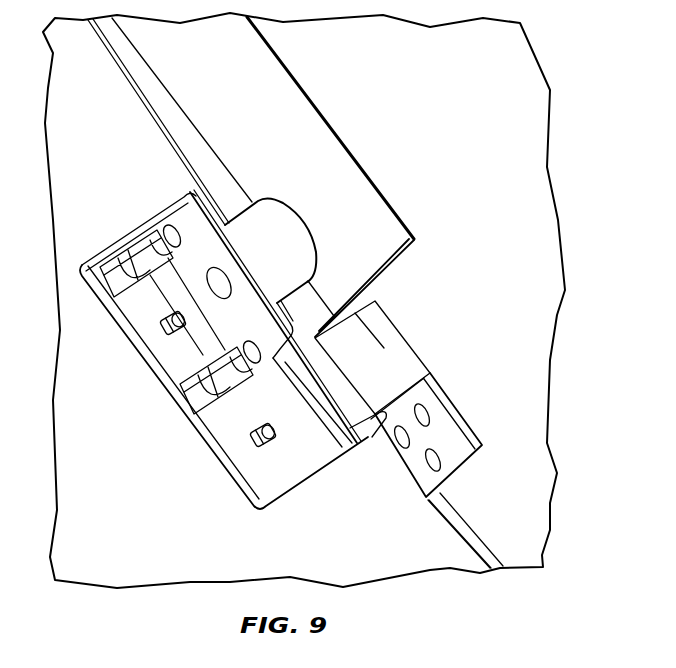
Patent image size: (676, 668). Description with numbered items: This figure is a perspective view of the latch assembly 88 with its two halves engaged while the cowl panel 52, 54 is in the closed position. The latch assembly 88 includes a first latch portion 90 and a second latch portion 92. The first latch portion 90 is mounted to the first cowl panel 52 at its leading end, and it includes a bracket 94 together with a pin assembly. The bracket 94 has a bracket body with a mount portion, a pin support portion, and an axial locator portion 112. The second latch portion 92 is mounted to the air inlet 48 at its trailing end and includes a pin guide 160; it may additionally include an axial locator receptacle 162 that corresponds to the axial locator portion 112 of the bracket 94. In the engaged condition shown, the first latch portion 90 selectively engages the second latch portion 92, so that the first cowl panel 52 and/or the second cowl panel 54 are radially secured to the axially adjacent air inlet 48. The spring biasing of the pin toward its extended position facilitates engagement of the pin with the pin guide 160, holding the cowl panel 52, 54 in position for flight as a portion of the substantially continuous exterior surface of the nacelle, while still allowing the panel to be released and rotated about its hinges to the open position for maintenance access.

The air inlet 48 is at (154, 92).
The pin guide 160 is at (257, 88).
The second latch portion 92 is at (376, 172).
The latch assembly 88 is at (234, 371).
The first latch portion 90 is at (202, 454).
The bracket 94 is at (237, 369).
The axial locator portion 112 is at (363, 433).
The axial locator receptacle 162 is at (374, 367).
The first cowl panel 52 is at (410, 546).
The second cowl panel 54 is at (460, 534).